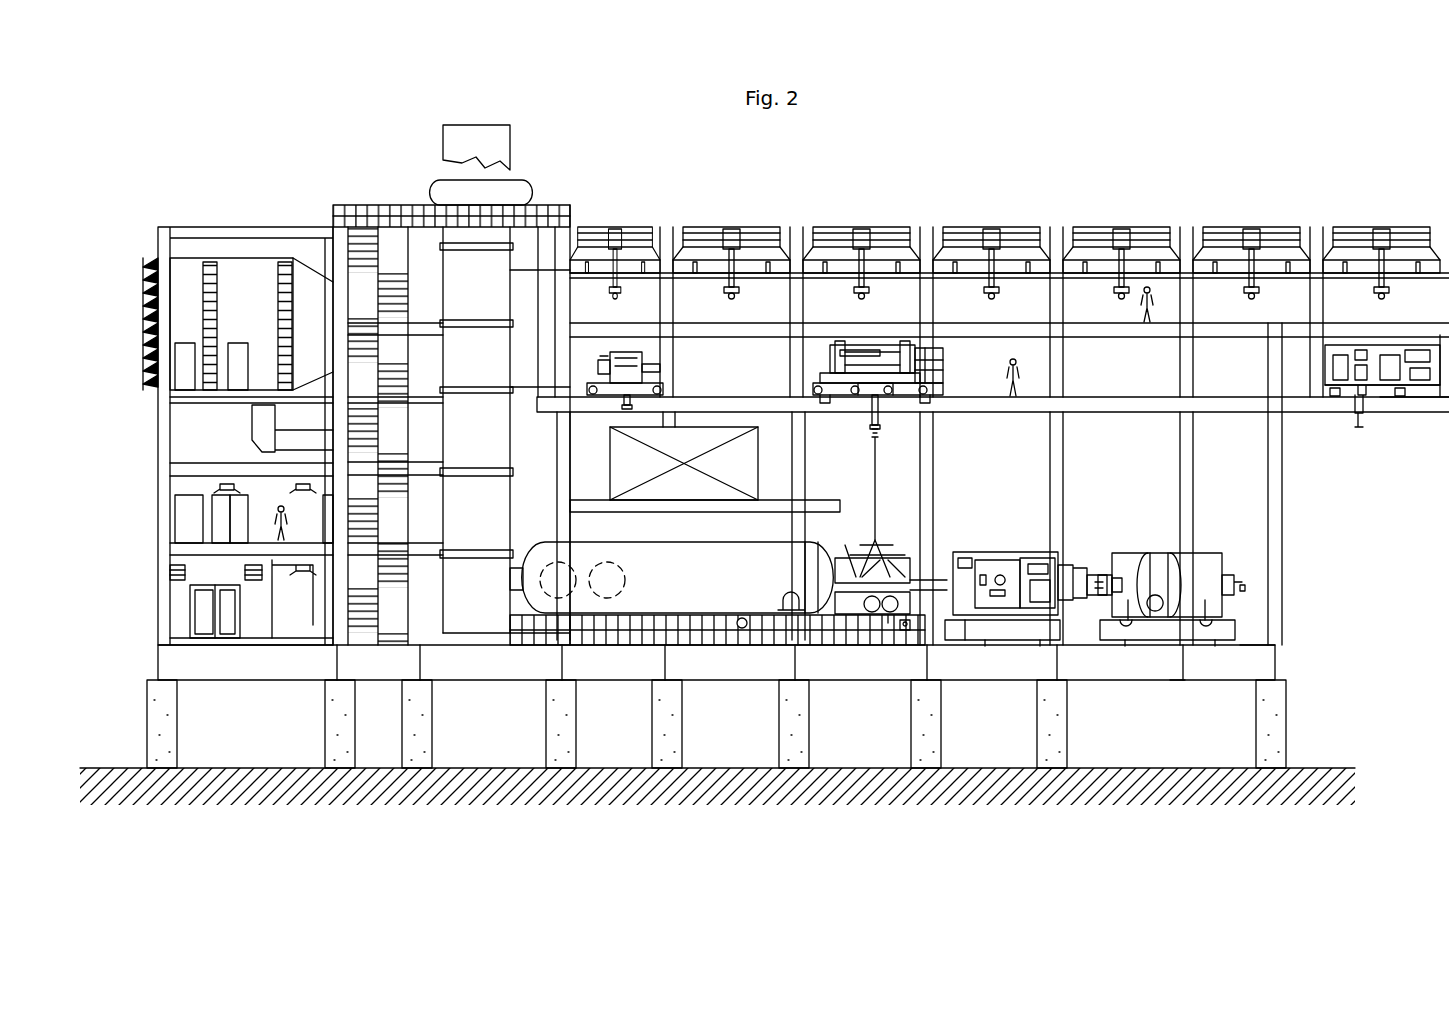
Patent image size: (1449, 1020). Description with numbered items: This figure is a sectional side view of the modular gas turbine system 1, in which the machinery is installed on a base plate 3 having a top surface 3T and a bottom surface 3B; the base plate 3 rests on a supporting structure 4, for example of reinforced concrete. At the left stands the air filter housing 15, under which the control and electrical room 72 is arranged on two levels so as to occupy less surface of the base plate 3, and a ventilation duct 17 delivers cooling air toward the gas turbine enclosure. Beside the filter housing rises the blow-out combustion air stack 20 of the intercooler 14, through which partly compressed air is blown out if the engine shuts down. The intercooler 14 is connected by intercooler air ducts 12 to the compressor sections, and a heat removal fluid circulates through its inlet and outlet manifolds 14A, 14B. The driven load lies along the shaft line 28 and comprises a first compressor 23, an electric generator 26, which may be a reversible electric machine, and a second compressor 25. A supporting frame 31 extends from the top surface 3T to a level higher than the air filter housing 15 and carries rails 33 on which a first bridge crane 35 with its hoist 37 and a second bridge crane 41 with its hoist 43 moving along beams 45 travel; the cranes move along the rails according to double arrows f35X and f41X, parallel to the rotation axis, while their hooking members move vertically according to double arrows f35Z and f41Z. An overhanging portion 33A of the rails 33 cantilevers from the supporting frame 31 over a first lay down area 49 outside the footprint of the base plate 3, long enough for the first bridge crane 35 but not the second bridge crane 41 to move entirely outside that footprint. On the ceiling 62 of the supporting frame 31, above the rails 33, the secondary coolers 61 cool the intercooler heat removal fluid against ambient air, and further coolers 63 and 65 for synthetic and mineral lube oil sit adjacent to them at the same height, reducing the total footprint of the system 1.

The modular gas turbine system 1 is at (1003, 160).
The base plate 3 is at (1245, 663).
The top surface 3T is at (1260, 642).
The bottom surface 3B is at (1176, 684).
The supporting structure 4 is at (178, 728).
The intercooler air ducts 12 is at (610, 562).
The intercooler 14 is at (726, 550).
The inlet manifold 14A is at (872, 616).
The outlet manifold 14B is at (886, 615).
The air filter housing 15 is at (245, 292).
The ventilation duct 17 is at (256, 428).
The blow-out combustion air stack 20 is at (470, 270).
The first compressor 23 is at (850, 570).
The second compressor 25 is at (1200, 572).
The electric generator 26 is at (1010, 552).
The shaft line 28 is at (1100, 580).
The supporting frame 31 is at (1262, 494).
The rails 33 is at (1145, 408).
The overhanging portion of the rails 33A is at (1417, 404).
The first bridge crane 35 is at (950, 367).
The hoist 37 is at (840, 354).
The second bridge crane 41 is at (652, 348).
The hoist 43 is at (650, 368).
The beams 45 is at (870, 410).
The first lay down area 49 is at (1328, 762).
The secondary coolers 61 is at (1437, 213).
The ceiling 62 is at (1385, 332).
The cooler 63 is at (775, 213).
The cooler 65 is at (660, 213).
The control and electrical room 72 is at (295, 610).
The double arrow f41x f41X is at (644, 318).
The double arrow f41z f41Z is at (583, 470).
The double arrow f35x f35X is at (912, 318).
The double arrow f35z f35Z is at (888, 455).